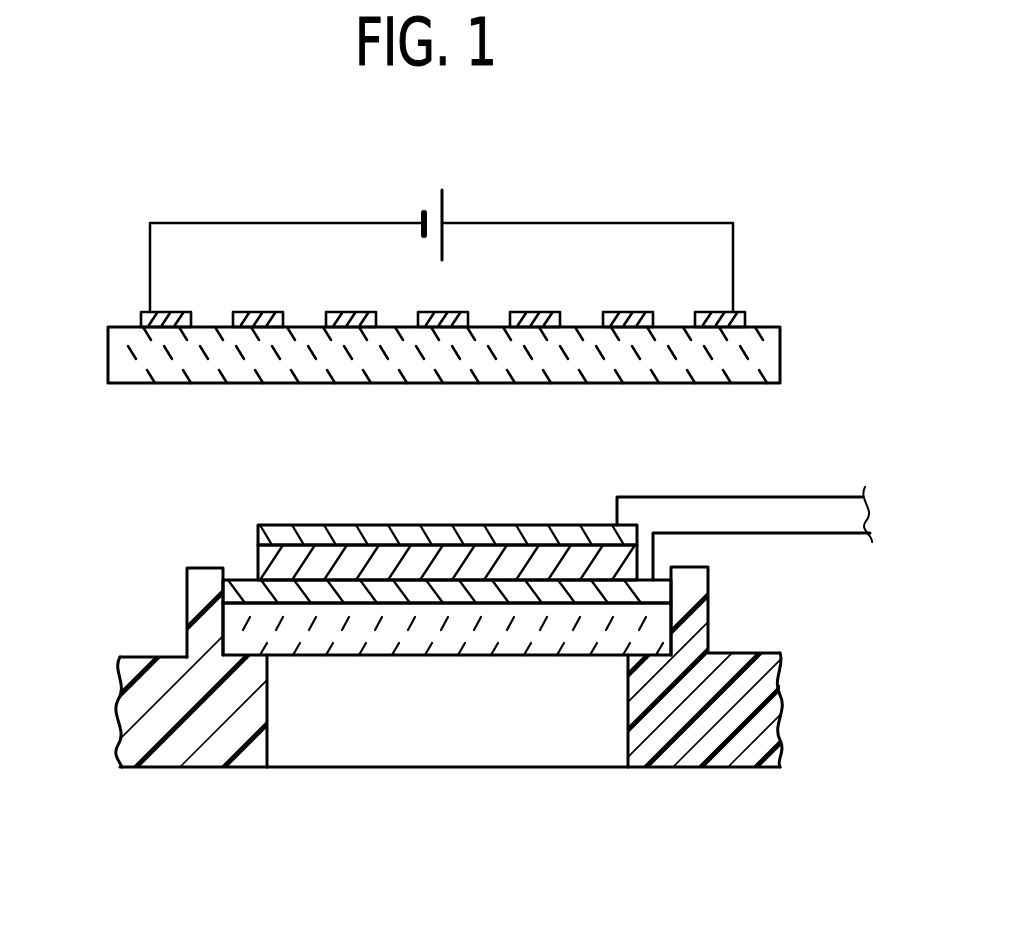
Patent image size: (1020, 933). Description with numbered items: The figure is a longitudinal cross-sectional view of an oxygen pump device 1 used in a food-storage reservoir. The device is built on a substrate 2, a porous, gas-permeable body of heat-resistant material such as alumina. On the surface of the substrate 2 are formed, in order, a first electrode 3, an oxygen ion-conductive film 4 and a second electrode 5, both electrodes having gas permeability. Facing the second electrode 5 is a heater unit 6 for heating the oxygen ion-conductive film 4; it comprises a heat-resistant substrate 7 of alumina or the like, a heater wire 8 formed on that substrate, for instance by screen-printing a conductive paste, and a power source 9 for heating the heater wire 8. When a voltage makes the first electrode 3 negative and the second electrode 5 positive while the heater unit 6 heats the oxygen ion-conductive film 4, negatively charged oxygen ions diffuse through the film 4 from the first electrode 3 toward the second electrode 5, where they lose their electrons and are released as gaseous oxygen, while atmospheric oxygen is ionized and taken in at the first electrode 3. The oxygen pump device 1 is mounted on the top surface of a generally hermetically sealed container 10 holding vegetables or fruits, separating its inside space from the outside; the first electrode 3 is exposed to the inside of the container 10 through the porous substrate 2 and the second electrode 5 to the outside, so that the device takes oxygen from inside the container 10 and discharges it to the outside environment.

The oxygen pump device 1 is at (90, 518).
The substrate 2 is at (323, 657).
The first electrode 3 is at (253, 578).
The oxygen ion-conductive film 4 is at (507, 543).
The second electrode 5 is at (405, 525).
The heater unit 6 is at (90, 293).
The heat-resistant substrate 7 is at (643, 383).
The heater wire 8 is at (626, 312).
The power source 9 is at (460, 178).
The container 10 is at (170, 768).